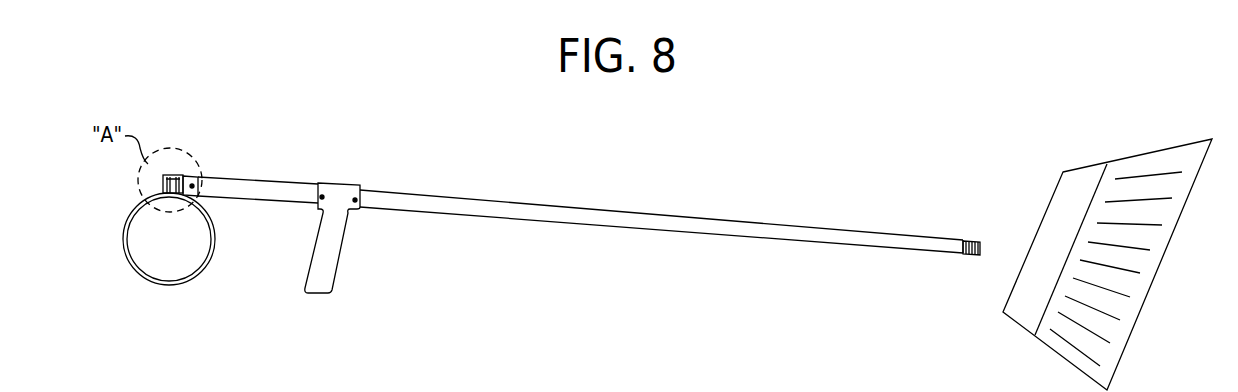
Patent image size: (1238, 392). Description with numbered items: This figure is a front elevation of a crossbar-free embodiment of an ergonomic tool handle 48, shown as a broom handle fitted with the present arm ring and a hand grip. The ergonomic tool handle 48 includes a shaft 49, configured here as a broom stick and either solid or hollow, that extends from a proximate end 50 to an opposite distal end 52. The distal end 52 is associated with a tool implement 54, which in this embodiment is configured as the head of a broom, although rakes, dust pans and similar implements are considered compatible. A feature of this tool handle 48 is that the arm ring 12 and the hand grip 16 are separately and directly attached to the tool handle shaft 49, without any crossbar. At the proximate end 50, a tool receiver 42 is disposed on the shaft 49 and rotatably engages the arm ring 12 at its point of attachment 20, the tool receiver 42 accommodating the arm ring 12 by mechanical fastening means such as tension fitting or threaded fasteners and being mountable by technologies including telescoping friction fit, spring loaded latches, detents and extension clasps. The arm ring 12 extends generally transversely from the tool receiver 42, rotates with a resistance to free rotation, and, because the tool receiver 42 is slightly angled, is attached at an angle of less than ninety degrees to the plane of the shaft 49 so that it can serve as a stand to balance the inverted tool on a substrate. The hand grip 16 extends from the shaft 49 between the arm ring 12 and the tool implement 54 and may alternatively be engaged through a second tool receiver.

The arm ring 12 is at (203, 264).
The hand grip 16 is at (327, 269).
The point of attachment 20 is at (200, 187).
The tool receiver 42 is at (185, 177).
The ergonomic tool handle 48 is at (377, 98).
The shaft 49 is at (553, 213).
The proximate end 50 is at (223, 188).
The distal end 52 is at (955, 245).
The tool implement 54 is at (1128, 168).